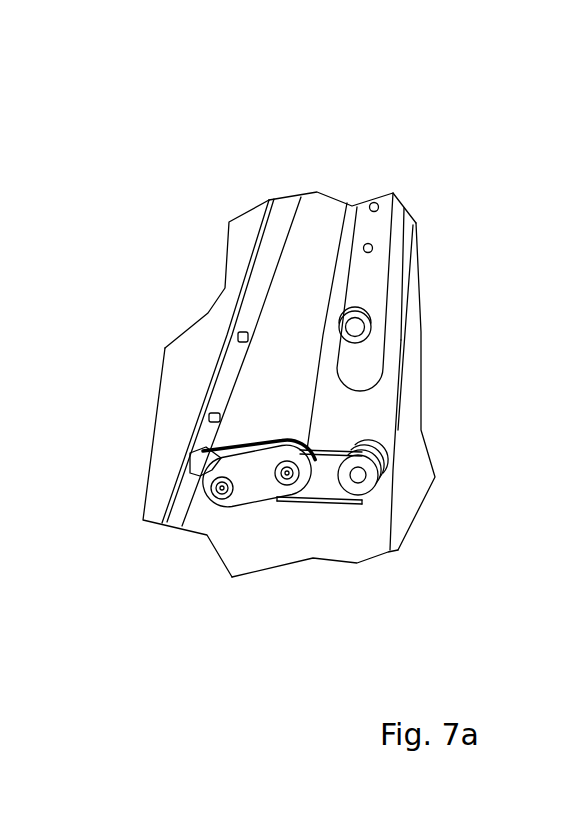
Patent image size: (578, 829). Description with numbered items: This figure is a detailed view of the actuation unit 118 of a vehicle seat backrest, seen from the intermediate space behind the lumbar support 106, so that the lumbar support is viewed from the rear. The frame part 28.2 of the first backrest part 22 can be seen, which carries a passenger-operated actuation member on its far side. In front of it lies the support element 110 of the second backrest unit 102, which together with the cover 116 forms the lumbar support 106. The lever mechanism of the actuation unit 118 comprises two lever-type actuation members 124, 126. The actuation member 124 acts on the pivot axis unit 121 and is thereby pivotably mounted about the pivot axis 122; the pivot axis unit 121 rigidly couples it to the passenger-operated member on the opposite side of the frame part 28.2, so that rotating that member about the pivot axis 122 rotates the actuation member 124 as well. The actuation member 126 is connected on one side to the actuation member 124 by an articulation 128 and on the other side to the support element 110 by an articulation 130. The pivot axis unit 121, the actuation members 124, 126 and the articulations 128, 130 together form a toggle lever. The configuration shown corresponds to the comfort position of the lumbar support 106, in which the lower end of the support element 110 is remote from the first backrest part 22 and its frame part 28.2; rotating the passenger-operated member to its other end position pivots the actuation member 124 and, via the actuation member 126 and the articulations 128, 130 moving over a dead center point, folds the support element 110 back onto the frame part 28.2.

The support element 110 is at (278, 215).
The second backrest unit 102 is at (199, 310).
The lumbar support 106 is at (197, 356).
The cover 116 is at (180, 374).
The first backrest part 22 is at (409, 392).
The frame part 28.2 is at (387, 418).
The pivot axis unit 121 is at (391, 483).
The actuation unit 118 is at (388, 512).
The pivot axis 122 is at (359, 485).
The actuation member 124 is at (300, 497).
The actuation member 126 is at (258, 487).
The articulation 128 is at (284, 481).
The articulation 130 is at (210, 489).